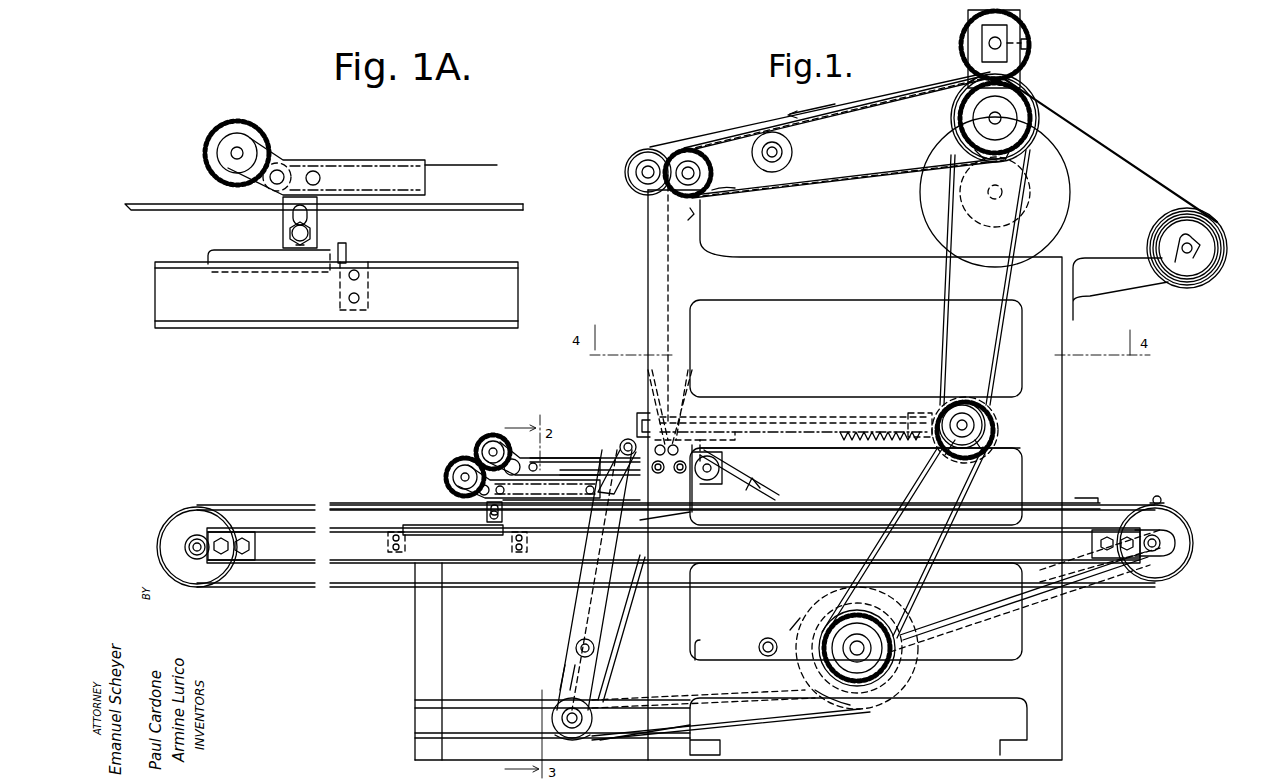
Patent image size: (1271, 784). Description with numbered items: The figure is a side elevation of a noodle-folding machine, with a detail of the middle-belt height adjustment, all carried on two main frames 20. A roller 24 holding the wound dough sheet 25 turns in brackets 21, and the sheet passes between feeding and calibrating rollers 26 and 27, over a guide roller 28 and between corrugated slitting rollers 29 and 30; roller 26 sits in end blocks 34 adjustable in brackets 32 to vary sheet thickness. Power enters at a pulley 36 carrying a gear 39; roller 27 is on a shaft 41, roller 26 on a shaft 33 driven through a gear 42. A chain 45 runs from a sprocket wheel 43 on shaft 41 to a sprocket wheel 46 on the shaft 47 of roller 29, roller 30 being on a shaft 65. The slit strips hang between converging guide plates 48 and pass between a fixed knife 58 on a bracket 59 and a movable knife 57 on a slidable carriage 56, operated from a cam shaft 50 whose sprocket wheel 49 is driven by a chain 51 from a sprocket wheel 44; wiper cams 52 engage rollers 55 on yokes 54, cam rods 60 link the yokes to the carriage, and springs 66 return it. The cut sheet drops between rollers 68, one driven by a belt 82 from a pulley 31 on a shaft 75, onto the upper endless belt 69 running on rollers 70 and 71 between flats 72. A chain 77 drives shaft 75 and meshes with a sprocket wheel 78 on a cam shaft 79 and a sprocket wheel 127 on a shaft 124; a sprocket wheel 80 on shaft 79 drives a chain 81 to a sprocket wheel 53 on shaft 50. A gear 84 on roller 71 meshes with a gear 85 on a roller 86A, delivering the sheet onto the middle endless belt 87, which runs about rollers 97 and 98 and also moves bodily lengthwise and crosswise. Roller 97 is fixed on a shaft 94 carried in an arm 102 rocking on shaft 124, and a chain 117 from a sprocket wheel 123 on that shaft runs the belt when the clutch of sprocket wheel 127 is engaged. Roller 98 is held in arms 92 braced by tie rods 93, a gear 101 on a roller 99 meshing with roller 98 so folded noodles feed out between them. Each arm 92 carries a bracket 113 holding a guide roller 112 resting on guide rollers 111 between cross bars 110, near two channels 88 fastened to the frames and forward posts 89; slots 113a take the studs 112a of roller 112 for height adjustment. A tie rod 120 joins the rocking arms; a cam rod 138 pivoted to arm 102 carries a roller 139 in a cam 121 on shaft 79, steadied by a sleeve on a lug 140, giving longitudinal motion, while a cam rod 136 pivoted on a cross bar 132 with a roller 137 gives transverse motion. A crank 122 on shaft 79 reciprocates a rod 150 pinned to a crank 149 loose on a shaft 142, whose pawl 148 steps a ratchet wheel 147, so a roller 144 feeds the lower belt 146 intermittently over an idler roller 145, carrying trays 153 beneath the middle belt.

In FIG. 1, the main frames 20 is at (1055, 416).
In FIG. 1, the brackets 21 is at (1135, 286).
In FIG. 1, the roller 24 is at (1215, 255).
In FIG. 1, the dough sheet 25 is at (925, 95).
In FIG. 1, the feeding and calibrating roller 26 is at (1030, 56).
In FIG. 1, the lower calibrating roller 27 is at (1040, 100).
In FIG. 1, the guide roller 28 is at (792, 153).
In FIG. 1, the corrugated slitting roller 29 is at (688, 218).
In FIG. 1, the corrugated slitting roller 30 is at (635, 155).
In FIG. 1, the pulley 31 is at (742, 474).
In FIG. 1, the brackets 32 is at (982, 52).
In FIG. 1, the shaft 33 is at (988, 43).
In FIG. 1, the end blocks 34 is at (975, 35).
In FIG. 1, the pulley 36 is at (1070, 195).
In FIG. 1, the gear 39 is at (1030, 180).
In FIG. 1, the shaft 41 is at (988, 118).
In FIG. 1, the gear 42 is at (1030, 44).
In FIG. 1, the sprocket wheel 43 is at (1033, 120).
In FIG. 1, the sprocket wheel 44 is at (1010, 157).
In FIG. 1, the chain 45 is at (838, 183).
In FIG. 1, the sprocket wheel 46 is at (725, 190).
In FIG. 1, the shaft 47 is at (688, 165).
In FIG. 1, the converging guide plates 48 is at (655, 385).
In FIG. 1, the sprocket wheel 49 is at (948, 395).
In FIG. 1, the cam shaft 50 is at (948, 450).
In FIG. 1, the chain 51 is at (944, 354).
In FIG. 1, the wiper cams 52 is at (985, 390).
In FIG. 1, the sprocket wheel 53 is at (950, 462).
In FIG. 1, the yokes 54 is at (915, 410).
In FIG. 1, the rollers 55 is at (998, 414).
In FIG. 1, the slidable carriage 56 is at (640, 412).
In FIG. 1, the movable knife 57 is at (645, 425).
In FIG. 1, the fixed knife 58 is at (690, 430).
In FIG. 1, the bracket 59 is at (738, 442).
In FIG. 1, the cam rods 60 is at (810, 416).
In FIG. 1, the shaft 65 is at (640, 174).
In FIG. 1, the springs 66 is at (850, 445).
In FIG. 1, the rollers 68 is at (660, 474).
In FIG. 1, the upper endless belt 69 is at (608, 448).
In FIG. 1, the roller 70 is at (716, 478).
In FIG. 1, the roller 71 is at (539, 468).
In FIG. 1, the flats 72 is at (572, 458).
In FIG. 1, the shaft 75 is at (702, 484).
In FIG. 1, the chain 77 is at (772, 495).
In FIG. 1, the sprocket wheel 78 is at (800, 625).
In FIG. 1, the cam shaft 79 is at (848, 642).
In FIG. 1, the sprocket wheel 80 is at (885, 598).
In FIG. 1, the chain 81 is at (938, 562).
In FIG. 1, the belt 82 is at (745, 440).
In FIG. 1, the gear 84 is at (535, 455).
In FIG. 1, the gear 85 is at (483, 447).
In FIG. 1, the roller 86A is at (495, 435).
In FIG. 1A, the middle endless belt 87 is at (446, 165).
In FIG. 1, the middle endless belt 87 is at (535, 502).
In FIG. 1A, the channels 88 is at (336, 295).
In FIG. 1, the channels 88 is at (468, 558).
In FIG. 1, the forward posts 89 is at (440, 640).
In FIG. 1A, the arms 92 is at (336, 160).
In FIG. 1, the arms 92 is at (562, 500).
In FIG. 1A, the tie rods 93 is at (321, 178).
In FIG. 1, the tie rods 93 is at (505, 491).
In FIG. 1, the shaft 94 is at (650, 518).
In FIG. 1, the roller 97 is at (612, 470).
In FIG. 1A, the roller 98 is at (281, 170).
In FIG. 1, the roller 98 is at (483, 497).
In FIG. 1A, the roller 99 is at (216, 154).
In FIG. 1, the roller 99 is at (452, 477).
In FIG. 1A, the gear 101 is at (206, 131).
In FIG. 1, the gear 101 is at (458, 462).
In FIG. 1, the arm 102 is at (585, 608).
In FIG. 1A, the cross bars 110 is at (347, 251).
In FIG. 1, the cross bars 110 is at (388, 542).
In FIG. 1A, the guide rollers 111 is at (222, 250).
In FIG. 1, the guide rollers 111 is at (425, 525).
In FIG. 1A, the guide roller 112 is at (300, 252).
In FIG. 1, the guide roller 112 is at (492, 520).
In FIG. 1A, the studs 112a is at (290, 238).
In FIG. 1A, the bracket 113 is at (317, 212).
In FIG. 1, the bracket 113 is at (502, 513).
In FIG. 1A, the slots 113a is at (292, 212).
In FIG. 1, the chain 117 is at (575, 648).
In FIG. 1, the tie rod 120 is at (621, 443).
In FIG. 1, the cam 121 is at (790, 615).
In FIG. 1, the crank 122 is at (905, 645).
In FIG. 1, the sprocket wheel 123 is at (562, 686).
In FIG. 1, the shaft 124 is at (582, 738).
In FIG. 1, the sprocket wheel 127 is at (565, 740).
In FIG. 1, the cross bar 132 is at (700, 695).
In FIG. 1, the cam rod 136 is at (755, 722).
In FIG. 1, the roller 137 is at (870, 700).
In FIG. 1, the cam rod 138 is at (697, 645).
In FIG. 1, the roller 139 is at (815, 688).
In FIG. 1, the lug 140 is at (770, 638).
In FIG. 1, the shaft 142 is at (1162, 543).
In FIG. 1, the roller 144 is at (1175, 560).
In FIG. 1, the idler roller 145 is at (195, 577).
In FIG. 1A, the lower endless belt 146 is at (516, 211).
In FIG. 1, the lower endless belt 146 is at (272, 505).
In FIG. 1, the ratchet wheel 147 is at (1170, 510).
In FIG. 1, the pawl 148 is at (1155, 495).
In FIG. 1, the crank 149 is at (1170, 528).
In FIG. 1, the rod 150 is at (962, 608).
In FIG. 1A, the trays 153 is at (140, 203).
In FIG. 1, the trays 153 is at (363, 503).